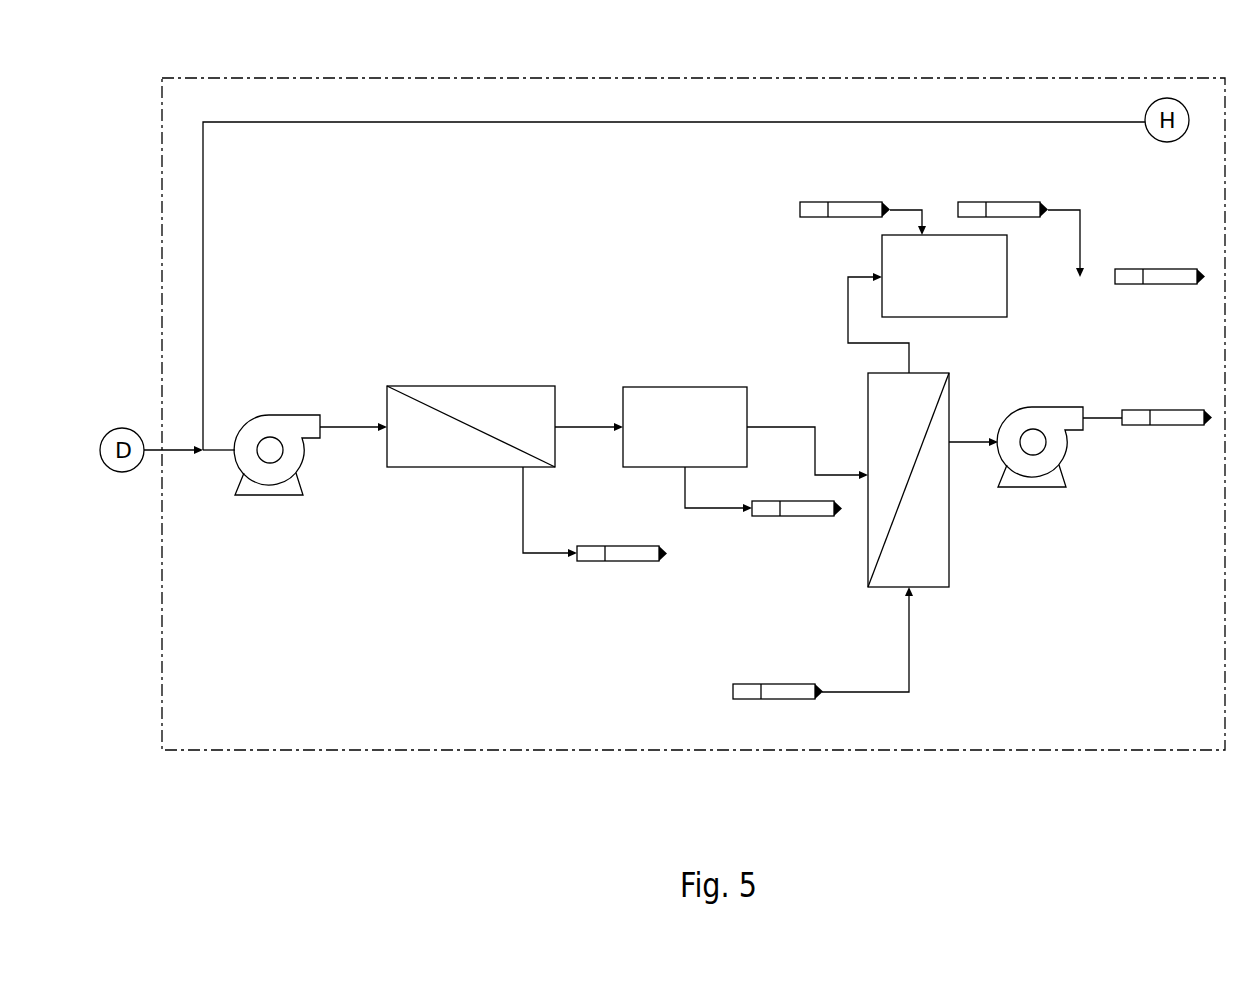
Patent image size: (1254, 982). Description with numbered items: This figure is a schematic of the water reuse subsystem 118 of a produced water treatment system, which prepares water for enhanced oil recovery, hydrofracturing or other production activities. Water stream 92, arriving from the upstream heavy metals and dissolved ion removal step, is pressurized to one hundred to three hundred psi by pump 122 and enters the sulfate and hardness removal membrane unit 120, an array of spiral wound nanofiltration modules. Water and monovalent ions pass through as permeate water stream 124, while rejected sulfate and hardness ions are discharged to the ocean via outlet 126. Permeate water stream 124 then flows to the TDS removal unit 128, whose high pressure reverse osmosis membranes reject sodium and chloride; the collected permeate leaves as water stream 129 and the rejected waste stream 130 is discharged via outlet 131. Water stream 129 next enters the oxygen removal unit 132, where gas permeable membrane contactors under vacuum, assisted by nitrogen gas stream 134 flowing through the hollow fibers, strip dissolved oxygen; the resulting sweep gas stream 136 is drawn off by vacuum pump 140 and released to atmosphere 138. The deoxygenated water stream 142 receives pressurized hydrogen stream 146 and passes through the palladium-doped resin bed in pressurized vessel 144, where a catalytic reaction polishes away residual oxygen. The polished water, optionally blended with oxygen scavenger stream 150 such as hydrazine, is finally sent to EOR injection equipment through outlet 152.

The water reuse subsystem 118 is at (990, 78).
The water stream 92 is at (298, 122).
The pump 122 is at (278, 425).
The sulfate and hardness removal membrane unit 120 is at (437, 386).
The permeate water stream 124 is at (578, 427).
The outlet 126 is at (625, 561).
The TDS removal unit 128 is at (684, 413).
The water stream 129 is at (783, 427).
The waste stream 130 is at (685, 490).
The outlet 131 is at (793, 517).
The oxygen removal unit 132 is at (949, 537).
The nitrogen gas stream 134 is at (733, 690).
The sweep gas stream 136 is at (953, 440).
The vacuum pump 140 is at (1045, 415).
The atmosphere 138 is at (1172, 410).
The deoxygenated water stream 142 is at (848, 300).
The pressurized vessel 144 is at (882, 250).
The pressurized hydrogen stream 146 is at (843, 202).
The oxygen scavenger stream 150 is at (1081, 212).
The outlet 152 is at (1172, 268).